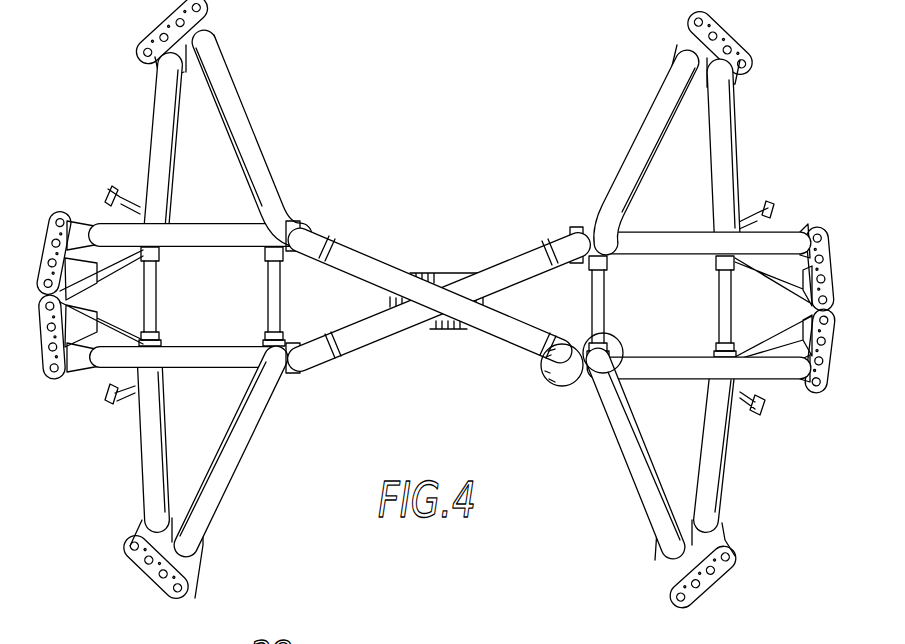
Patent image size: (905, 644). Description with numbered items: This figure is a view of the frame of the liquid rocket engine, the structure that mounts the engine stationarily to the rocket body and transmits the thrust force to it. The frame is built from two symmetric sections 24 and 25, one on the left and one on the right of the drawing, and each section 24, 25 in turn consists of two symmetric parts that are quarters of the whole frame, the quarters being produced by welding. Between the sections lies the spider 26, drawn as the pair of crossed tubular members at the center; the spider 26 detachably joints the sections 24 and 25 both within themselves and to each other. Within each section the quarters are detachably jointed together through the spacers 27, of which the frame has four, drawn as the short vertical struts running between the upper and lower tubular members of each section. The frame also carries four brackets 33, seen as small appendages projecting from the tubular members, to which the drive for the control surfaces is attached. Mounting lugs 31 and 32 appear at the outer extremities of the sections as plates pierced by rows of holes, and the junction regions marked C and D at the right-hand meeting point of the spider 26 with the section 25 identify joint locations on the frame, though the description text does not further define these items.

The frame section 24 is at (242, 135).
The frame section 25 is at (723, 167).
The spider 26 is at (378, 330).
The spacer 27 is at (148, 305).
The lower mounting brackets 31 is at (128, 512).
The side mounting plates 32 is at (55, 381).
The bracket 33 is at (738, 417).
The joint C is at (544, 390).
The joint D is at (624, 327).